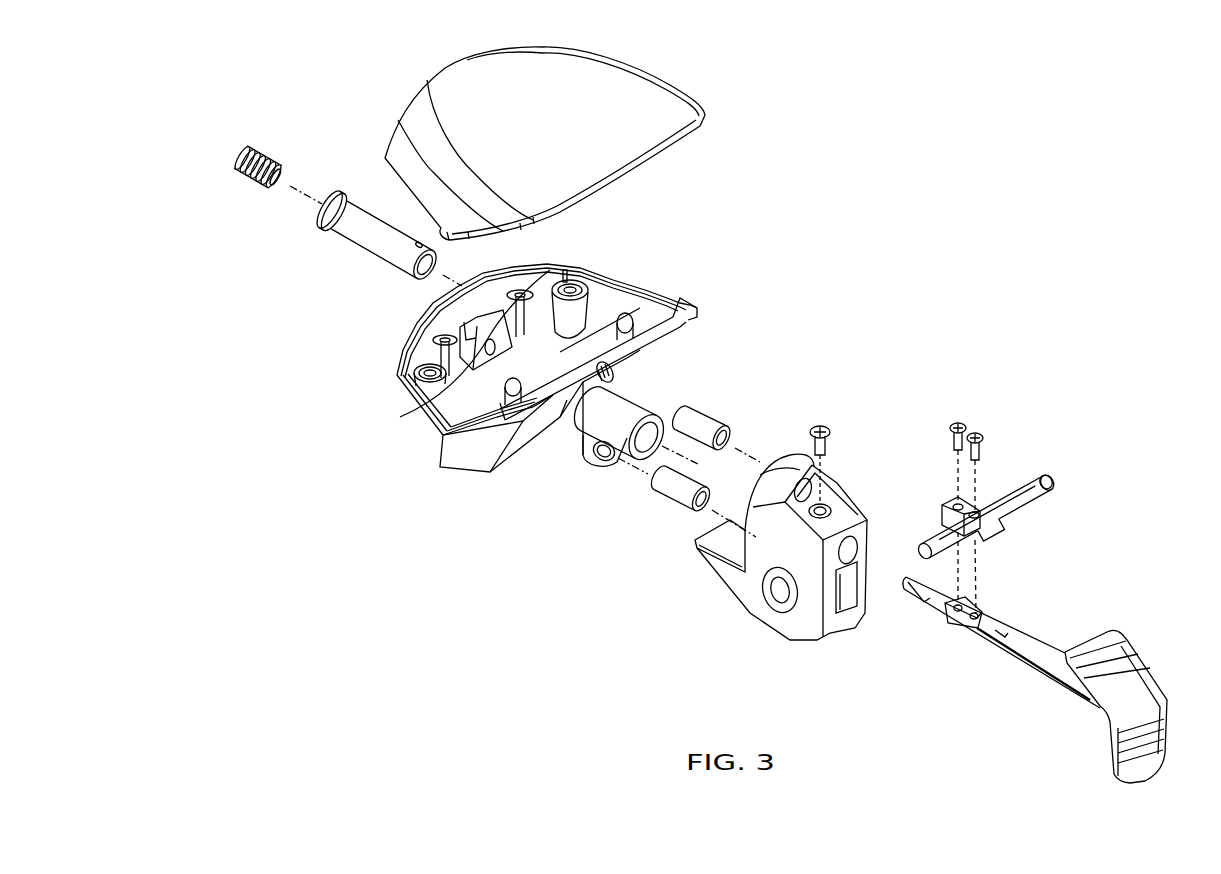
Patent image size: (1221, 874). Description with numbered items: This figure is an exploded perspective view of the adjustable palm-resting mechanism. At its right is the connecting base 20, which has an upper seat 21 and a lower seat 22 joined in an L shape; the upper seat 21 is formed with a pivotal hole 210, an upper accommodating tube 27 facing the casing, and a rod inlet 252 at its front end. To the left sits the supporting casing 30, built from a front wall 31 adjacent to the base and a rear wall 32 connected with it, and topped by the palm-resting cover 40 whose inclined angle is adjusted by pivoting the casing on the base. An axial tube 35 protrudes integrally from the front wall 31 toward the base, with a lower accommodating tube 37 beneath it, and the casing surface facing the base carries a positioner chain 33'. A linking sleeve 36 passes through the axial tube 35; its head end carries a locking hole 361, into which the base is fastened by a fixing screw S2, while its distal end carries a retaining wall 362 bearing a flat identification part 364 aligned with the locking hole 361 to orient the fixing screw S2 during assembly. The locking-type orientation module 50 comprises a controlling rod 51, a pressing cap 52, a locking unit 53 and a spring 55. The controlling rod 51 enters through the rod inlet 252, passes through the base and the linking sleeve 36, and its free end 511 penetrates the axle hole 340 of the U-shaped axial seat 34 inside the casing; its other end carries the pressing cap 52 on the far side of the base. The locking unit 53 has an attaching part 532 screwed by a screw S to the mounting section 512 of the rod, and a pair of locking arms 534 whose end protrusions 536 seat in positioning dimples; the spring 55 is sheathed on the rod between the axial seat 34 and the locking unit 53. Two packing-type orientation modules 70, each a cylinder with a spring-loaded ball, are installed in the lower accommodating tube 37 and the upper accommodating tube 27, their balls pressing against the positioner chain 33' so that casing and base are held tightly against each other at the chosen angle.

The connecting base 20 is at (803, 550).
The upper seat 21 is at (808, 622).
The lower seat 22 is at (728, 578).
The upper accommodating tube 27 is at (793, 460).
The pivotal hole 210 is at (778, 596).
The rod inlet 252 is at (856, 545).
The supporting casing 30 is at (514, 377).
The front wall 31 is at (472, 452).
The rear wall 32 is at (408, 331).
The positioner chain 33' is at (649, 373).
The axial seat 34 is at (440, 402).
The axle hole 340 is at (529, 290).
The axial tube 35 is at (640, 410).
The linking sleeve 36 is at (357, 219).
The locking hole 361 is at (417, 250).
The retaining wall 362 is at (322, 216).
The identification part 364 is at (338, 191).
The lower accommodating tube 37 is at (607, 457).
The palm-resting cover 40 is at (623, 182).
The locking-type orientation module 50 is at (1049, 674).
The controlling rod 51 is at (996, 642).
The free end 511 is at (915, 596).
The mounting section 512 is at (967, 630).
The pressing cap 52 is at (1133, 676).
The locking unit 53 is at (1022, 523).
The attaching part 532 is at (948, 502).
The locking arms 534 is at (1018, 503).
The protrusion 536 is at (1048, 479).
The spring 55 is at (263, 152).
The packing-type orientation module 70 is at (722, 416).
The screw S is at (977, 433).
The fixing screw S2 is at (820, 427).